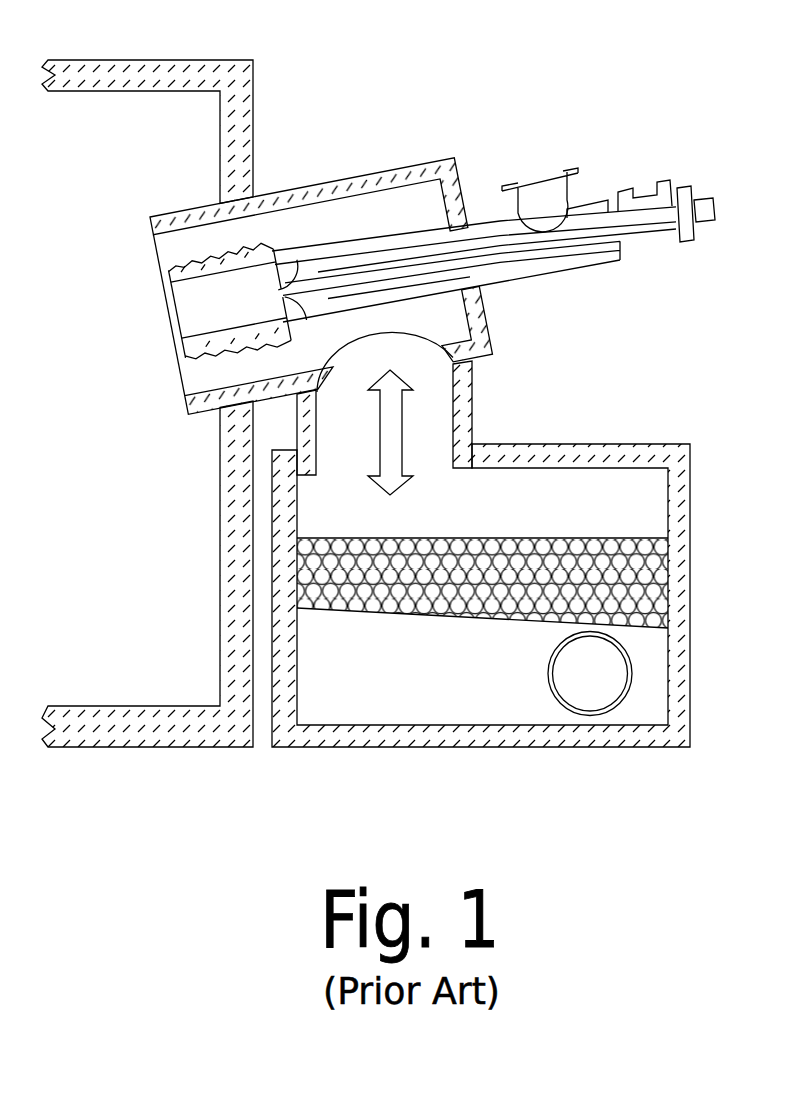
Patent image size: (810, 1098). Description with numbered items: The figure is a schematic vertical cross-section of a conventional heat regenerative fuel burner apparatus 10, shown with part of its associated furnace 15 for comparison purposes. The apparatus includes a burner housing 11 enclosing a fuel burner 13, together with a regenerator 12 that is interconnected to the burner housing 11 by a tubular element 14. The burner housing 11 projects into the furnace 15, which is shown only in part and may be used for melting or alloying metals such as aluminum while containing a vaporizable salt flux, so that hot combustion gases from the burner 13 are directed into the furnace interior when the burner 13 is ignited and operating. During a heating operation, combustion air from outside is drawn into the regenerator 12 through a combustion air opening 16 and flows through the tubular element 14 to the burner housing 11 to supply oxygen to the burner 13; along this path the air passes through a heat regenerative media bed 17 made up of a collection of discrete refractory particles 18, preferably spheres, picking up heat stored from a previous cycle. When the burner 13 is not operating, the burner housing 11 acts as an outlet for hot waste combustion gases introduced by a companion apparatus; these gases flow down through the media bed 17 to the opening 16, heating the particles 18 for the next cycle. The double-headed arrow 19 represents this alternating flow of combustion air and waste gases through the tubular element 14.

The burner apparatus 10 is at (573, 110).
The burner housing 11 is at (345, 180).
The regenerator 12 is at (635, 448).
The fuel burner 13 is at (266, 246).
The tubular element 14 is at (467, 407).
The furnace 15 is at (247, 80).
The combustion air opening 16 is at (608, 693).
The heat regenerative media bed 17 is at (558, 575).
The refractory particles 18 is at (468, 548).
The double-headed arrow 19 is at (385, 455).